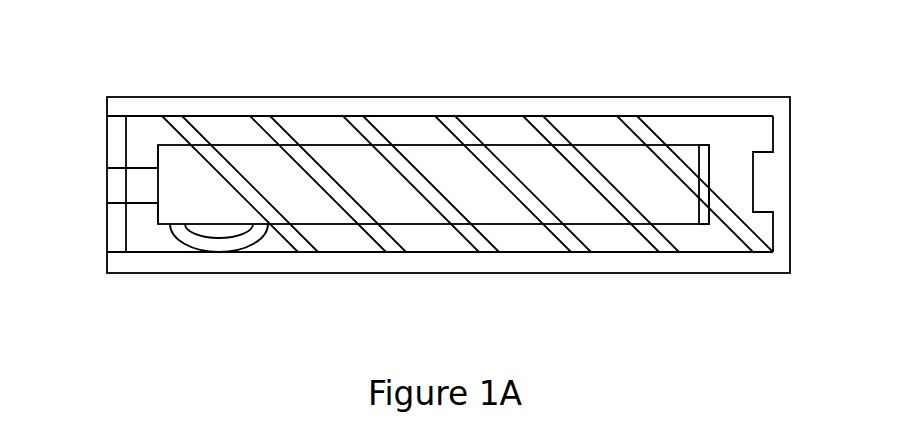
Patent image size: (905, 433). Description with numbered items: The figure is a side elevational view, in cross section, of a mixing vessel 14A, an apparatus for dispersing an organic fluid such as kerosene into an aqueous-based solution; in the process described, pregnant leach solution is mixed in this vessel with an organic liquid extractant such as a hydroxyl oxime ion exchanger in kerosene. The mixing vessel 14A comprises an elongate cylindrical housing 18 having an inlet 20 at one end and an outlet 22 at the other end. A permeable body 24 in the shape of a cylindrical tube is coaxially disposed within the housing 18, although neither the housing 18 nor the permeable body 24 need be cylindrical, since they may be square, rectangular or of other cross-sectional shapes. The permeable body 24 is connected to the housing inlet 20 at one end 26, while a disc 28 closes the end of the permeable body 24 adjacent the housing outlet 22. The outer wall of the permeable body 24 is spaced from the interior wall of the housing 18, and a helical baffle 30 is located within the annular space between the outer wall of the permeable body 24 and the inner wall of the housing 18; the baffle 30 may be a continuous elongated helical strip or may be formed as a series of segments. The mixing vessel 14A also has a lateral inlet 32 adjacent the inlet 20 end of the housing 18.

The housing 18 is at (465, 97).
The inlet 20 is at (128, 185).
The outlet 22 is at (772, 178).
The permeable body 24 is at (532, 145).
The end 26 is at (118, 205).
The disc 28 is at (704, 145).
The helical baffle 30 is at (303, 247).
The lateral inlet 32 is at (208, 248).
The mixing vessel 14A is at (575, 308).